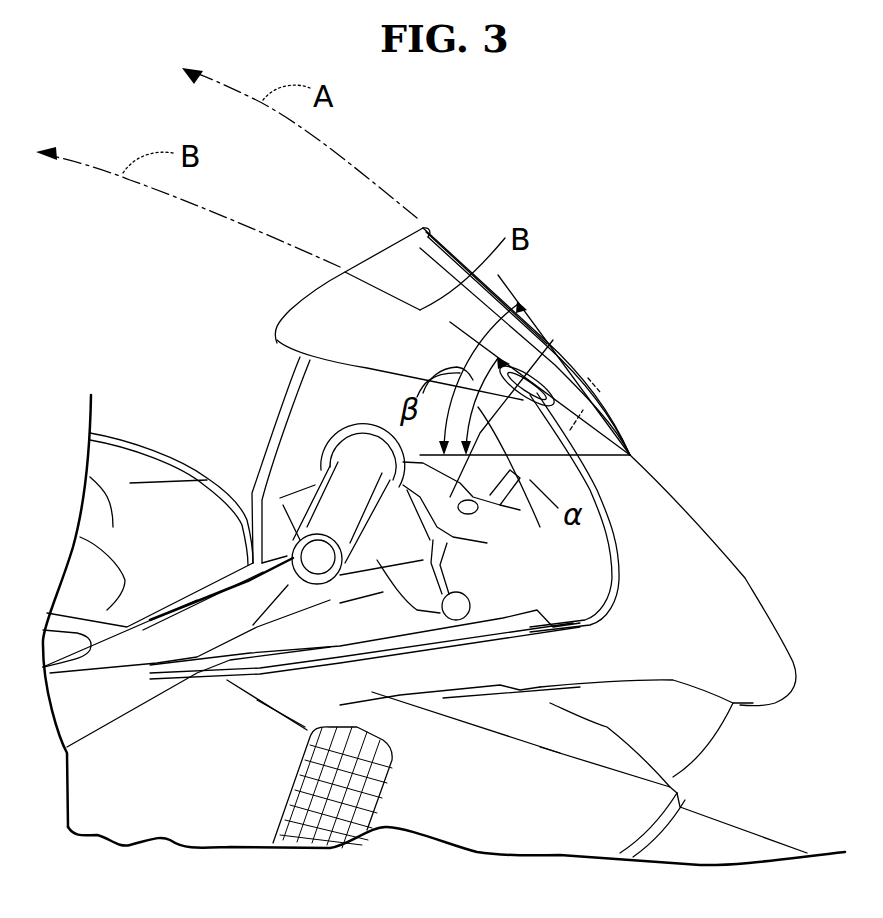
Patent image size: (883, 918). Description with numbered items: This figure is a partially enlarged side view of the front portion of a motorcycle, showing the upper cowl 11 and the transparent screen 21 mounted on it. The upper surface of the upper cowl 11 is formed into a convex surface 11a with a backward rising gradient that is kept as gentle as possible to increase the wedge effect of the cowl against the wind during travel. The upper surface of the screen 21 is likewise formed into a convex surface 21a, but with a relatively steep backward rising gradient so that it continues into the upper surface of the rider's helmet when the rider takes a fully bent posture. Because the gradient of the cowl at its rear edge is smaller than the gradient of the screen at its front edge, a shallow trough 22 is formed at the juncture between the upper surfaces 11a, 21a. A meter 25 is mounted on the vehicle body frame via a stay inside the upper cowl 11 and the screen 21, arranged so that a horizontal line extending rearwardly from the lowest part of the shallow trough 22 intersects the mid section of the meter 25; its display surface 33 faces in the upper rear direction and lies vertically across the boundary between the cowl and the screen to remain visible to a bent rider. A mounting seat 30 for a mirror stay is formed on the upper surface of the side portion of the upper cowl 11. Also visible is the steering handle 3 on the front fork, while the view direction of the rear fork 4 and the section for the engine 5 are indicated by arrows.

The steering handle 3 is at (333, 520).
The rear fork 4 is at (232, 305).
The engine 5 is at (614, 344).
The upper cowl 11 is at (714, 662).
The convex surface 11a is at (738, 583).
The screen 21 is at (383, 265).
The convex surface 21a is at (445, 244).
The shallow trough 22 is at (630, 455).
The meter 25 is at (503, 450).
The mounting seat 30 is at (527, 380).
The display surface 33 is at (483, 540).